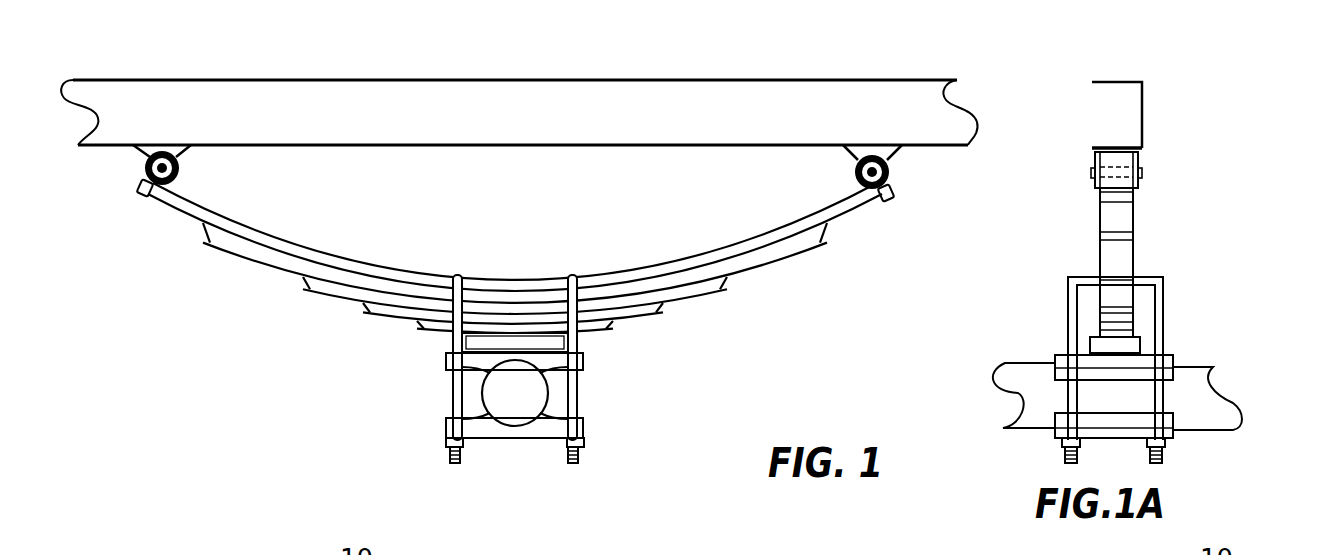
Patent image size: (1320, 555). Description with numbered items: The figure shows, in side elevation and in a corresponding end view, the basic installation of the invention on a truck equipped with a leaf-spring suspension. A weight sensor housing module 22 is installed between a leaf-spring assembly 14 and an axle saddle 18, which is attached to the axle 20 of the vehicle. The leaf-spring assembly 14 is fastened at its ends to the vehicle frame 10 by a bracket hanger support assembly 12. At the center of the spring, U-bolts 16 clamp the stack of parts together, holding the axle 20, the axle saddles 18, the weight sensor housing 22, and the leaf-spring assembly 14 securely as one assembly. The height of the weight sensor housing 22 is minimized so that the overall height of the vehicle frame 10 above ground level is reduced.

In FIG. 1, the frame 10 is at (490, 92).
In FIG. 1A, the frame 10 is at (1133, 82).
In FIG. 1, the bracket hanger support assembly 12 is at (137, 177).
In FIG. 1A, the bracket hanger support assembly 12 is at (1138, 160).
In FIG. 1, the leaf-spring assembly 14 is at (272, 260).
In FIG. 1A, the leaf-spring assembly 14 is at (1135, 250).
In FIG. 1, the U-bolts 16 is at (460, 273).
In FIG. 1A, the U-bolts 16 is at (1157, 310).
In FIG. 1, the axle saddle 18 is at (447, 362).
In FIG. 1A, the axle saddle 18 is at (1173, 358).
In FIG. 1, the axle 20 is at (535, 392).
In FIG. 1A, the axle 20 is at (1018, 395).
In FIG. 1, the weight sensor housing module 22 is at (553, 342).
In FIG. 1A, the weight sensor housing module 22 is at (1097, 350).